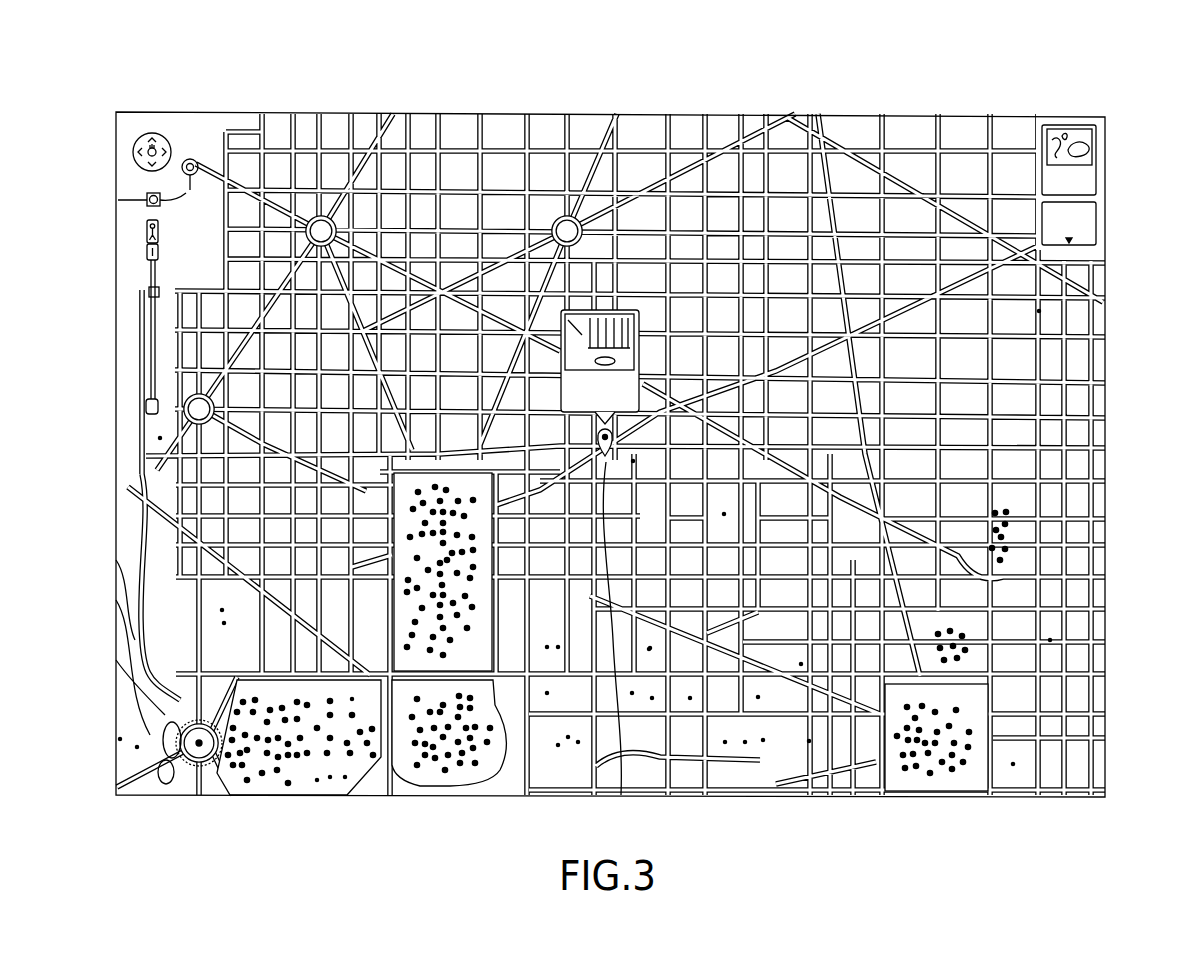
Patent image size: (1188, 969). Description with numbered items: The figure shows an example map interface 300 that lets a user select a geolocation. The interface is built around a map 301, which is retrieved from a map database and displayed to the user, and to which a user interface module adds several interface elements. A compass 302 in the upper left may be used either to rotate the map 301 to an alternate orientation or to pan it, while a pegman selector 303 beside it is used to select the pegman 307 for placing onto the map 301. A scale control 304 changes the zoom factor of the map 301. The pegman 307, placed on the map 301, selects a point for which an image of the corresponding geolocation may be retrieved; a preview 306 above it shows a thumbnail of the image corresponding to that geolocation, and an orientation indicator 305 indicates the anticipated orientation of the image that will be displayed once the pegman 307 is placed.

The map interface 300 is at (1182, 79).
The map 301 is at (943, 117).
The compass 302 is at (148, 133).
The pegman selector 303 is at (146, 230).
The scale control 304 is at (146, 250).
The orientation indicator 305 is at (621, 795).
The preview 306 is at (603, 308).
The pegman 307 is at (597, 450).